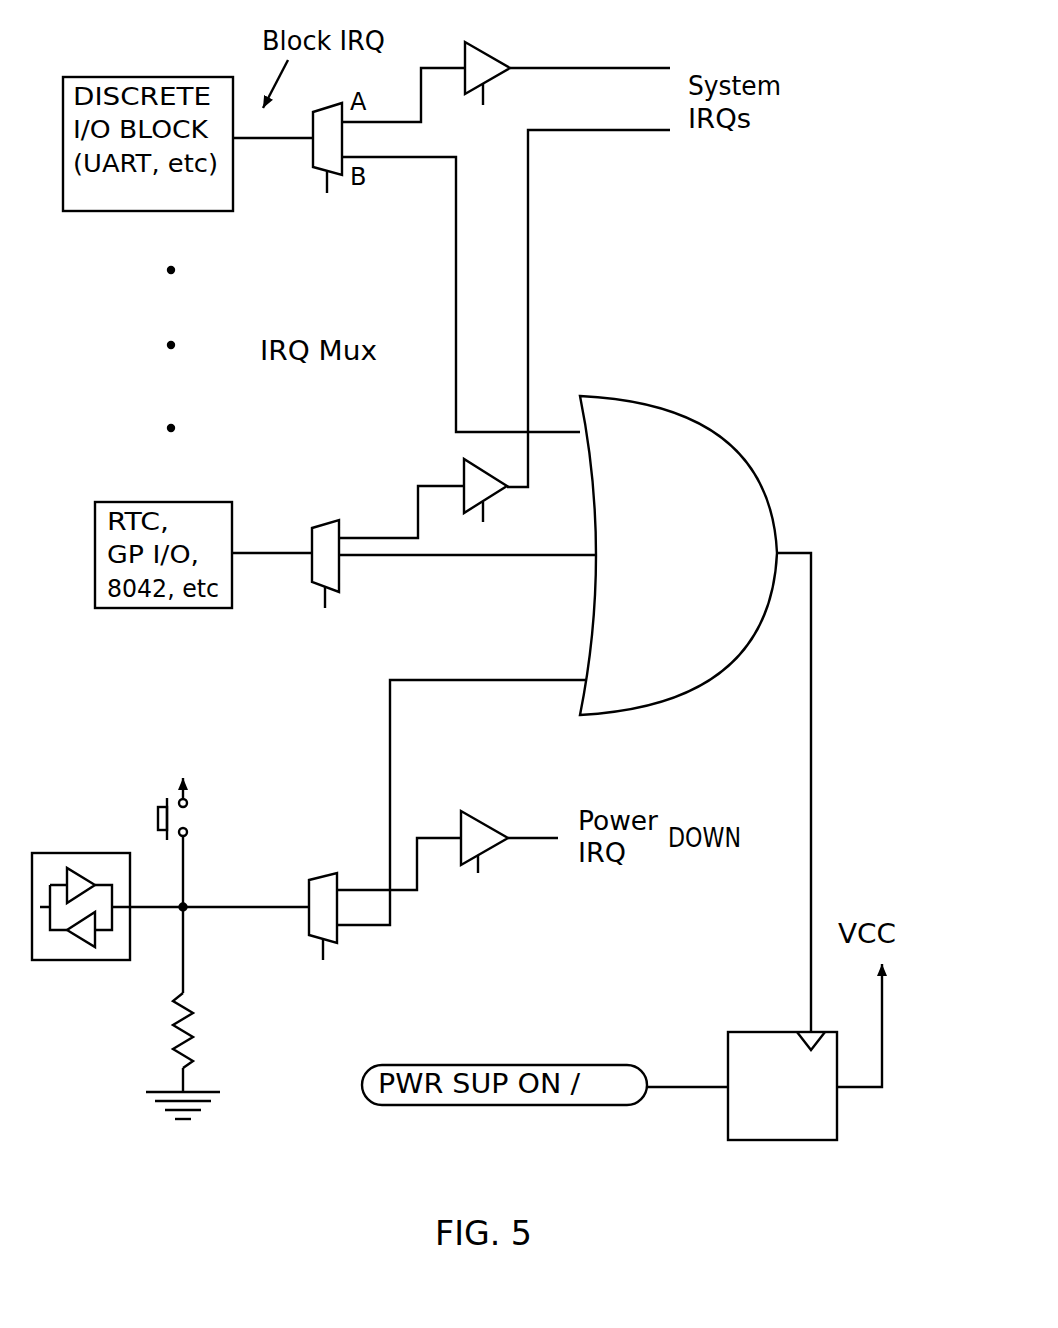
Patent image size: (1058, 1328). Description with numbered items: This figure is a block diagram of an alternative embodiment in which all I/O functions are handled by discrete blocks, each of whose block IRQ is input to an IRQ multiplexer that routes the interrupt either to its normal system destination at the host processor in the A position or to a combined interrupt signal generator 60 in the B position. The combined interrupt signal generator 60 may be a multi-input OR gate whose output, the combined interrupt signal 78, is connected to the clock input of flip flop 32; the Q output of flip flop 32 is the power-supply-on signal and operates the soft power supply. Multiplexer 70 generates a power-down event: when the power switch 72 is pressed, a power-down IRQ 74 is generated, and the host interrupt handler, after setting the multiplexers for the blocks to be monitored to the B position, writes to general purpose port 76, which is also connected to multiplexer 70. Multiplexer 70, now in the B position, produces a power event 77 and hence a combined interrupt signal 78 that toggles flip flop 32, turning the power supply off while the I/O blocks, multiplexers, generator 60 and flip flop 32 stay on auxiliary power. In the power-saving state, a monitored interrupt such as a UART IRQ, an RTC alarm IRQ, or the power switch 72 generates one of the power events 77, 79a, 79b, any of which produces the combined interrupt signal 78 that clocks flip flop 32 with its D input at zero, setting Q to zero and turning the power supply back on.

The flip flop 32 is at (782, 1028).
The combined interrupt signal generator 60 is at (713, 430).
The multiplexer 70 is at (313, 873).
The power switch S1 72 is at (173, 793).
The power-down IRQ 74 is at (513, 842).
The general purpose port 76 is at (95, 851).
The power event 77 is at (373, 930).
The combined interrupt signal 78 is at (808, 808).
The power event 79a is at (430, 162).
The power event 79b is at (410, 560).